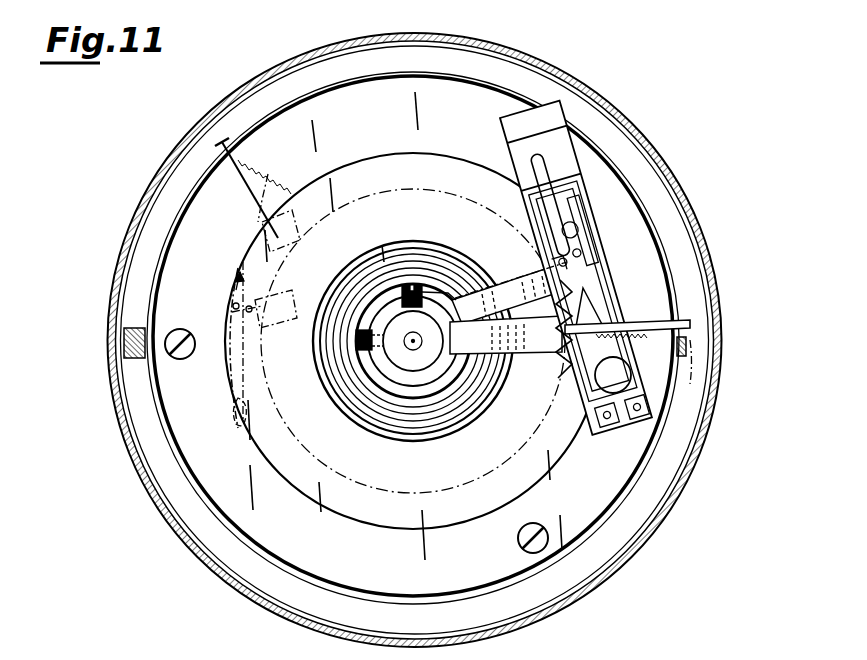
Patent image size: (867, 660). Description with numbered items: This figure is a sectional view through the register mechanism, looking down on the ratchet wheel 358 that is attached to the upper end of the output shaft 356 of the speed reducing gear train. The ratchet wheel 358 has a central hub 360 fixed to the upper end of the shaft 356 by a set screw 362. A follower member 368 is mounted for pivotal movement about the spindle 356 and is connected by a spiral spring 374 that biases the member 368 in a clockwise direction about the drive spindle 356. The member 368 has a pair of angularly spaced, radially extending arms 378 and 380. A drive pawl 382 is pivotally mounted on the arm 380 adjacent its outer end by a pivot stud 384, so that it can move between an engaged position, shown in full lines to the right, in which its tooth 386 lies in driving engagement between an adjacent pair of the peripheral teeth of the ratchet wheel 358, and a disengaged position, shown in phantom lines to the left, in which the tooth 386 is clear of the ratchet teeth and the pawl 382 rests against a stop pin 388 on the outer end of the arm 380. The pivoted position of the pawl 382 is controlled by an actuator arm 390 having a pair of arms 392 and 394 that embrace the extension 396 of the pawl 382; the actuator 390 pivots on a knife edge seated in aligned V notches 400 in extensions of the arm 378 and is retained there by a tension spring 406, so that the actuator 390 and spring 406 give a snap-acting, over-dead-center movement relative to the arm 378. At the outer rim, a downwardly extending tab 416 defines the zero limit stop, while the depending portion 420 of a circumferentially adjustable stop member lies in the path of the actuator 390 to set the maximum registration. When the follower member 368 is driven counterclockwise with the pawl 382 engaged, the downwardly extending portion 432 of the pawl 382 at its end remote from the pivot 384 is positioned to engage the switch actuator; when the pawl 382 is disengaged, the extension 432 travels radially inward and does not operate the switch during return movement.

The output shaft 356 is at (422, 342).
The ratchet wheel 358 is at (412, 500).
The central hub 360 is at (448, 368).
The set screw 362 is at (417, 317).
The follower member 368 is at (392, 380).
The spiral spring 374 is at (452, 372).
The arm 378 is at (513, 365).
The arm 380 is at (508, 272).
The drive pawl 382 is at (576, 268).
The pivot stud 384 is at (560, 263).
The tooth 386 is at (540, 300).
The stop pin 388 is at (576, 232).
The actuator arm 390 is at (660, 322).
The arm 392 is at (212, 243).
The arm 394 is at (612, 300).
The extension 396 is at (554, 312).
The V notches 400 is at (622, 392).
The tension spring 406 is at (686, 372).
The downwardly extending tab 416 is at (688, 347).
The depending portion 420 is at (122, 344).
The downwardly extending portion 432 is at (550, 205).